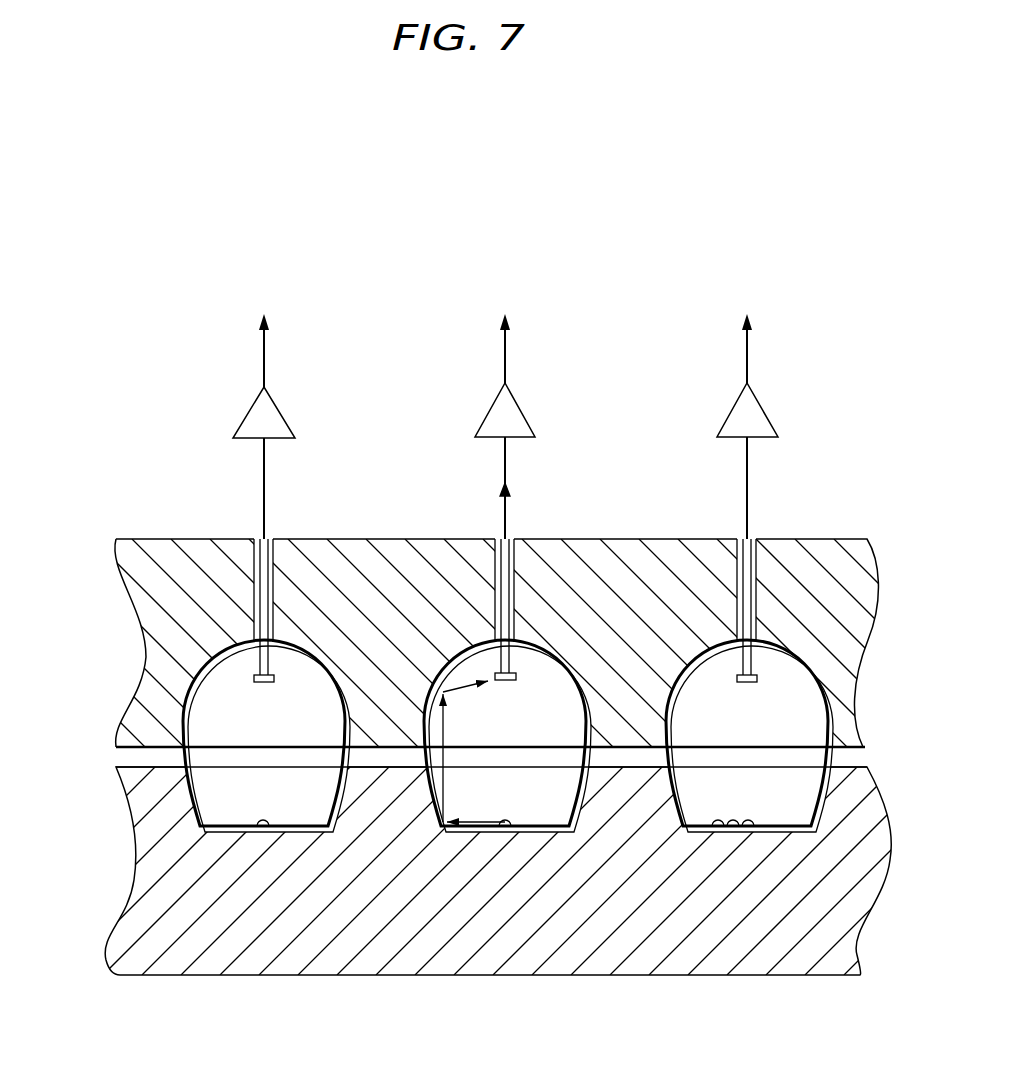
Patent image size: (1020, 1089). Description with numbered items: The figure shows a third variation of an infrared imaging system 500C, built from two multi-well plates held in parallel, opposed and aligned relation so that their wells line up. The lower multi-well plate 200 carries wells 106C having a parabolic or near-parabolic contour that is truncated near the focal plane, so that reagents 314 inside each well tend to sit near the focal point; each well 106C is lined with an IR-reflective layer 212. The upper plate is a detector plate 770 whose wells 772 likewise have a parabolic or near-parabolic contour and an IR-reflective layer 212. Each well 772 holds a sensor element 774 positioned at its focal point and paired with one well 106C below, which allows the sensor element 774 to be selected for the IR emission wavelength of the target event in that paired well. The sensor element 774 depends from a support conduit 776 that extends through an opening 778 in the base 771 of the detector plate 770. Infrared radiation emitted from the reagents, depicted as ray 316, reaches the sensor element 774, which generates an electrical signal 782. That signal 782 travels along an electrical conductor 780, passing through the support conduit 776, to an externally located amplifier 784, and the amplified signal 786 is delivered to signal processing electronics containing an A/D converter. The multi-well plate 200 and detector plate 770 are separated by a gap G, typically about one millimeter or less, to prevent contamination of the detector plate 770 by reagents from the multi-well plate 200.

The IR imaging system 500C is at (524, 188).
The detector plate 770 is at (840, 539).
The base 771 is at (146, 609).
The well 772 is at (808, 718).
The sensor element 774 is at (273, 683).
The support conduit 776 is at (516, 678).
The opening 778 is at (493, 538).
The electrical conductor 780 is at (266, 512).
The electrical signal 782 is at (528, 476).
The amplifier 784 is at (249, 410).
The amplified signal 786 is at (266, 365).
The IR-reflective layer 212 is at (203, 702).
The reagents 314 is at (268, 820).
The emitted IR 316 is at (448, 731).
The well 106C is at (290, 812).
The multi-well plate 200 is at (485, 958).
The gap G is at (122, 752).